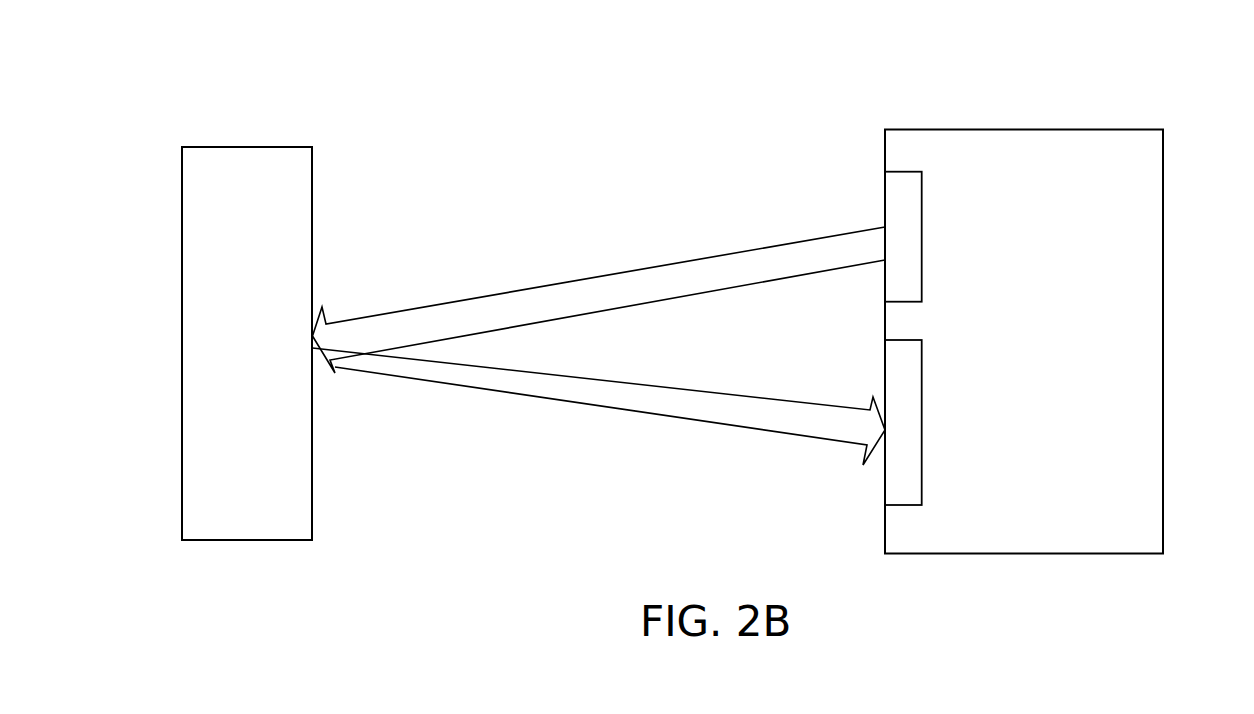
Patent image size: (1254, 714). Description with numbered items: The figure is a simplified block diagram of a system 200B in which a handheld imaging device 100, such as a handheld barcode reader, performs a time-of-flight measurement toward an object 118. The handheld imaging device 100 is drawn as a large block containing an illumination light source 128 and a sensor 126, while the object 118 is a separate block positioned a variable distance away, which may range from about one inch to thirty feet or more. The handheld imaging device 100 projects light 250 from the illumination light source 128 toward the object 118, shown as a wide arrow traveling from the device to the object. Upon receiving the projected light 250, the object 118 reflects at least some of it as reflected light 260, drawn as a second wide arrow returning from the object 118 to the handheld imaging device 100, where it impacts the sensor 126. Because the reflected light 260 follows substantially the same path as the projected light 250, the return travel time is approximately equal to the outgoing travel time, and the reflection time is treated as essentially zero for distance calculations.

The system 200B is at (192, 62).
The handheld imaging device 100 is at (1163, 155).
The object 118 is at (182, 193).
The sensor 126 is at (907, 362).
The illumination light source 128 is at (885, 190).
The projected light 250 is at (482, 295).
The reflected light 260 is at (736, 391).